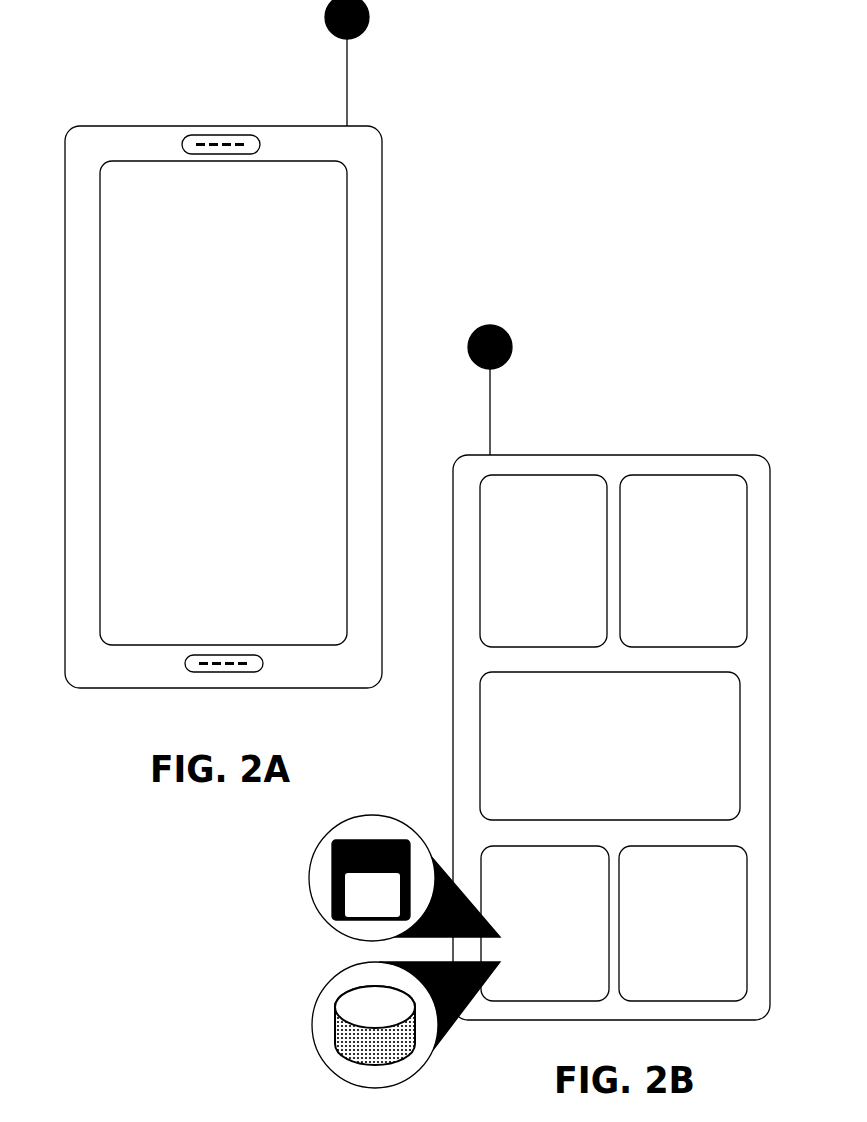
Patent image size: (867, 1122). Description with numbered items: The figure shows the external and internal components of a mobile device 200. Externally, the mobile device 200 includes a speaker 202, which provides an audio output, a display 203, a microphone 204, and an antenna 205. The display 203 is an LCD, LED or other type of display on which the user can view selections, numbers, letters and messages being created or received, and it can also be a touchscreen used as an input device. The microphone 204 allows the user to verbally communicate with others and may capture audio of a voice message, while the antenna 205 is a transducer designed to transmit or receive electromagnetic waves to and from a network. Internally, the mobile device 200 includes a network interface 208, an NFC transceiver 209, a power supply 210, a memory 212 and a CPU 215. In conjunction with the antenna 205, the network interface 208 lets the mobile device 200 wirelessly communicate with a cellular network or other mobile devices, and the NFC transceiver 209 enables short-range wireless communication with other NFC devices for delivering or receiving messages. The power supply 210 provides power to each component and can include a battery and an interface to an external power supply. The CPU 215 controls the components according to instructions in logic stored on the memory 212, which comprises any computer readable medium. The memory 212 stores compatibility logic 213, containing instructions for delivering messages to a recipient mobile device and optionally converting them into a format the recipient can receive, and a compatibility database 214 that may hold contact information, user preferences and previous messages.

In FIG. 2A, the mobile device 200 is at (312, 350).
In FIG. 2B, the mobile device 200 is at (611, 663).
In FIG. 2A, the speaker 202 is at (152, 107).
In FIG. 2A, the display 203 is at (312, 382).
In FIG. 2A, the microphone 204 is at (165, 695).
In FIG. 2A, the antenna 205 is at (413, 63).
In FIG. 2B, the network interface 208 is at (583, 527).
In FIG. 2B, the near-field communication (NFC) transceiver 209 is at (725, 527).
In FIG. 2B, the power supply 210 is at (530, 746).
In FIG. 2B, the memory 212 is at (463, 893).
In FIG. 2B, the compatibility logic 213 is at (335, 878).
In FIG. 2B, the compatibility database 214 is at (345, 1025).
In FIG. 2B, the central processing unit (CPU) 215 is at (733, 907).